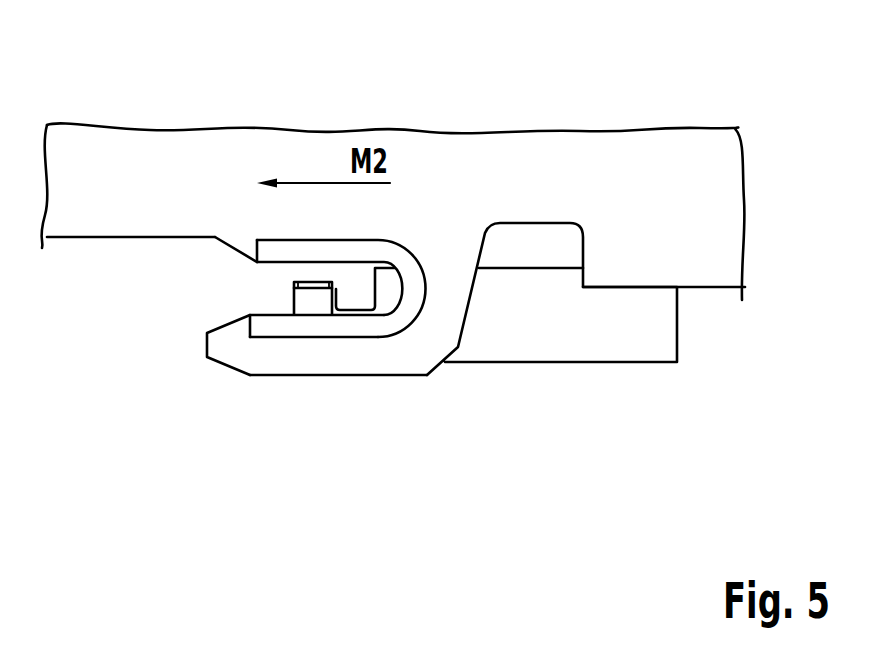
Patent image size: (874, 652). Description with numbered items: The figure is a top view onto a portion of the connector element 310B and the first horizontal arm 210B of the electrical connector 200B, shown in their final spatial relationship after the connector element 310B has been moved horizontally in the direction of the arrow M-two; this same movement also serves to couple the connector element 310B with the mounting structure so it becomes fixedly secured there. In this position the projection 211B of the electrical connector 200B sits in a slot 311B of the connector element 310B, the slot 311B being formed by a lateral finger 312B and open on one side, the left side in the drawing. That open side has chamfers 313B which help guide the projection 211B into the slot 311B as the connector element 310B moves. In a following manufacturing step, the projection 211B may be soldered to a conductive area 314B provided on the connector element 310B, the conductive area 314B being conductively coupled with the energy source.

The connector element 310B is at (672, 147).
The chamfers 313B is at (236, 248).
The slot 311B is at (226, 288).
The conductive area 314B is at (367, 323).
The lateral finger 312B is at (278, 360).
The projection 211B is at (310, 287).
The first horizontal arm 210B is at (622, 343).
The electrical connector 200B is at (627, 336).